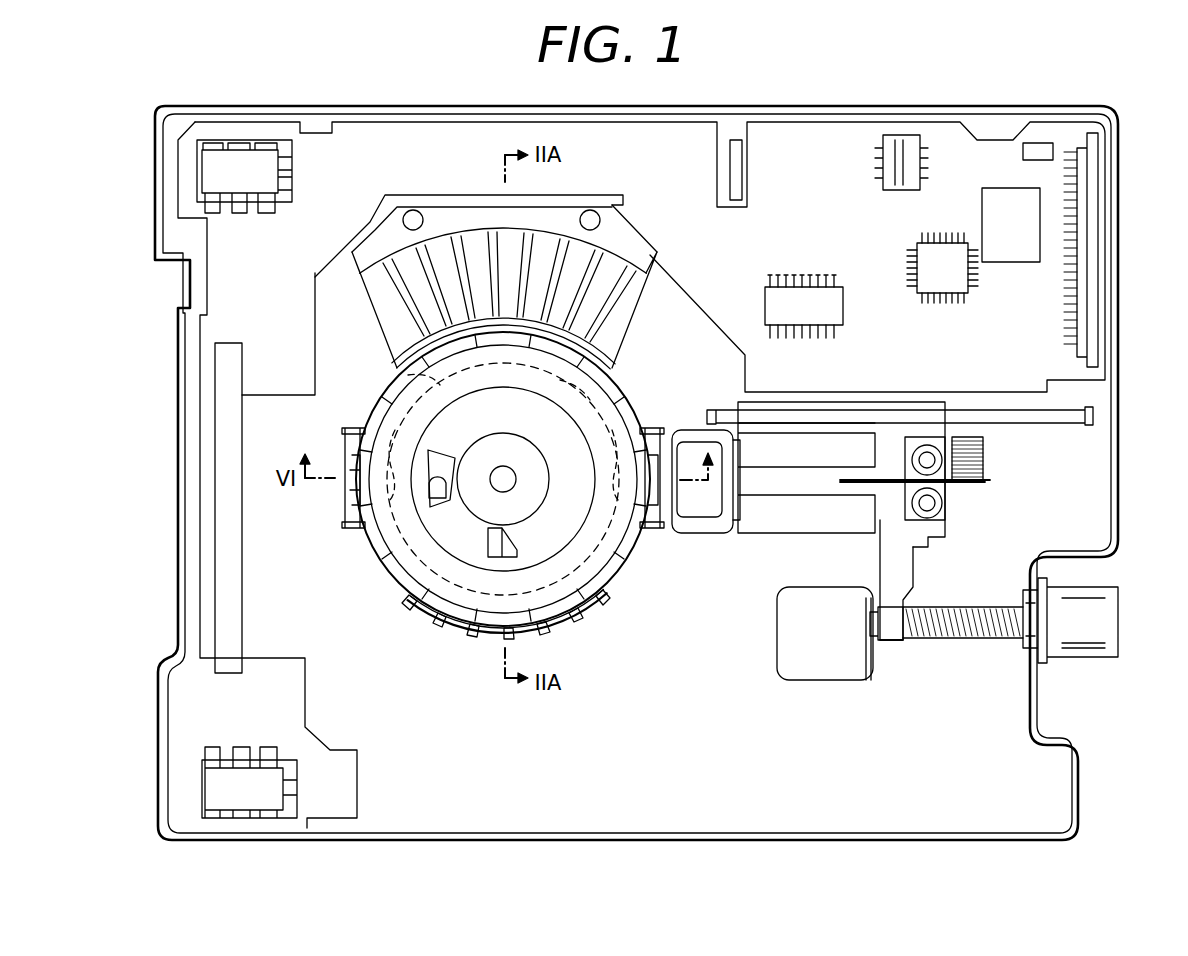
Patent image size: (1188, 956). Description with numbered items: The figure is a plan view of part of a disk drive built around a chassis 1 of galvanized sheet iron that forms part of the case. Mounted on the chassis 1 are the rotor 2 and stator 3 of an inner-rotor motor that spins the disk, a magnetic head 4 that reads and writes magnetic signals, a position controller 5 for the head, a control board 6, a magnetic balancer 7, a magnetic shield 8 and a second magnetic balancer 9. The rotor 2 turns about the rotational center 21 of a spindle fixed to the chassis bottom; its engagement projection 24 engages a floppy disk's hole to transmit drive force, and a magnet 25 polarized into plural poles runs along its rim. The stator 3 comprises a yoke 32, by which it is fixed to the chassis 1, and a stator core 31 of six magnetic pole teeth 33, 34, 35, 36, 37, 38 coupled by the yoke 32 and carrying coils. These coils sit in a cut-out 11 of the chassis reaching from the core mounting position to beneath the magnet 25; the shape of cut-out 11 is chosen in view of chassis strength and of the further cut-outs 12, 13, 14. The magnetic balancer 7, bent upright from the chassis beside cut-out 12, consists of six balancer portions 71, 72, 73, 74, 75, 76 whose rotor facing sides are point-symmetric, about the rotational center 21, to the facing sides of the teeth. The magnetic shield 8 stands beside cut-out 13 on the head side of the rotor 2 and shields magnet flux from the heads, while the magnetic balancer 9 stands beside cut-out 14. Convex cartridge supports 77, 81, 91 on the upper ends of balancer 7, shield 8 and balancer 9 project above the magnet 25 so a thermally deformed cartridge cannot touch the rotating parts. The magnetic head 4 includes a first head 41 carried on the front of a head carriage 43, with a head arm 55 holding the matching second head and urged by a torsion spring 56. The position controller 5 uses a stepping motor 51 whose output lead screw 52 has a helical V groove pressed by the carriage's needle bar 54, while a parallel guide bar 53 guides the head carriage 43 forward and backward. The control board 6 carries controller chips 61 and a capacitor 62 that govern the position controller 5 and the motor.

The chassis 1 is at (1120, 490).
The rotor 2 is at (362, 546).
The stator 3 is at (368, 330).
The magnetic head 4 is at (688, 540).
The position controller 5 is at (1066, 697).
The control board 6 is at (990, 150).
The magnetic balancer 7 is at (494, 692).
The magnetic shield 8 is at (660, 540).
The magnetic balancer 9 is at (338, 502).
The cut-out 11 is at (384, 396).
The cut-out 12 is at (395, 582).
The cut-out 13 is at (640, 418).
The cut-out 14 is at (376, 420).
The rotational center 21 is at (505, 479).
The engagement projection 24 is at (447, 468).
The magnet 25 is at (603, 398).
The stator core 31 is at (372, 224).
The yoke 32 is at (622, 226).
The magnetic pole tooth 33 is at (636, 287).
The magnetic pole tooth 34 is at (570, 245).
The magnetic pole tooth 35 is at (522, 242).
The magnetic pole tooth 36 is at (482, 240).
The magnetic pole tooth 37 is at (430, 247).
The magnetic pole tooth 38 is at (387, 270).
The first head 41 is at (722, 508).
The head carriage 43 is at (800, 520).
The stepping motor 51 is at (1118, 590).
The lead screw 52 is at (962, 640).
The guide bar 53 is at (1060, 415).
The needle bar 54 is at (908, 578).
The head arm 55 is at (825, 487).
The torsion spring 56 is at (985, 465).
The chip 61 is at (838, 316).
The capacitor 62 is at (1025, 248).
The magnetic balancer portion 71 is at (406, 604).
The magnetic balancer portion 72 is at (438, 622).
The magnetic balancer portion 73 is at (472, 636).
The magnetic balancer portion 74 is at (545, 635).
The magnetic balancer portion 75 is at (580, 620).
The magnetic balancer portion 76 is at (607, 602).
The cartridge support 77 is at (507, 640).
The cartridge support 81 is at (662, 448).
The cartridge support 91 is at (348, 482).